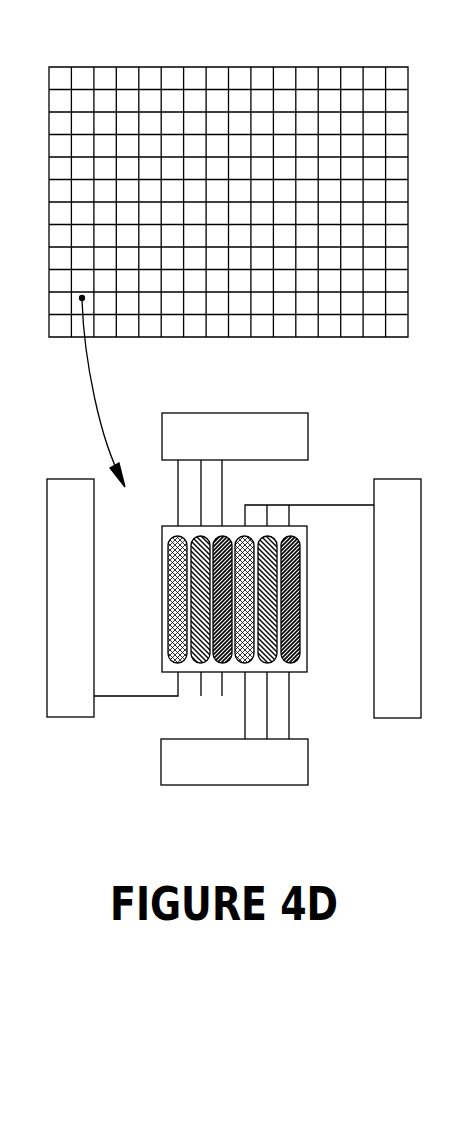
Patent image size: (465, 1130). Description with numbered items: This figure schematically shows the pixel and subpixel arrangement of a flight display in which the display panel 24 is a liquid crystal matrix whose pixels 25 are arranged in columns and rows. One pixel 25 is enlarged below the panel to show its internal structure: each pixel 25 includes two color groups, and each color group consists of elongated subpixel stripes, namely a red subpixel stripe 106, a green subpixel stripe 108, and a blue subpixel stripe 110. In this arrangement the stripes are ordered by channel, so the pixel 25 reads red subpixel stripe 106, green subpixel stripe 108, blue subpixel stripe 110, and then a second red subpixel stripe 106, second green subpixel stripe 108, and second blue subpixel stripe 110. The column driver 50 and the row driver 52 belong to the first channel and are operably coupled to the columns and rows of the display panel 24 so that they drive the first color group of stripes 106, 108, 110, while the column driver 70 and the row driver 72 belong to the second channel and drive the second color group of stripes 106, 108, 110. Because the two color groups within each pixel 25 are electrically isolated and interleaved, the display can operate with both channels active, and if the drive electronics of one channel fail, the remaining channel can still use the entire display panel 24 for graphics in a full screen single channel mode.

The display panel 24 is at (97, 66).
The pixel 25 is at (206, 124).
The column driver 50 is at (162, 420).
The row driver 52 is at (75, 479).
The column driver 70 is at (308, 768).
The row driver 72 is at (390, 719).
The red subpixel stripe 106 is at (176, 665).
The green subpixel stripe 108 is at (199, 666).
The blue subpixel stripe 110 is at (222, 666).